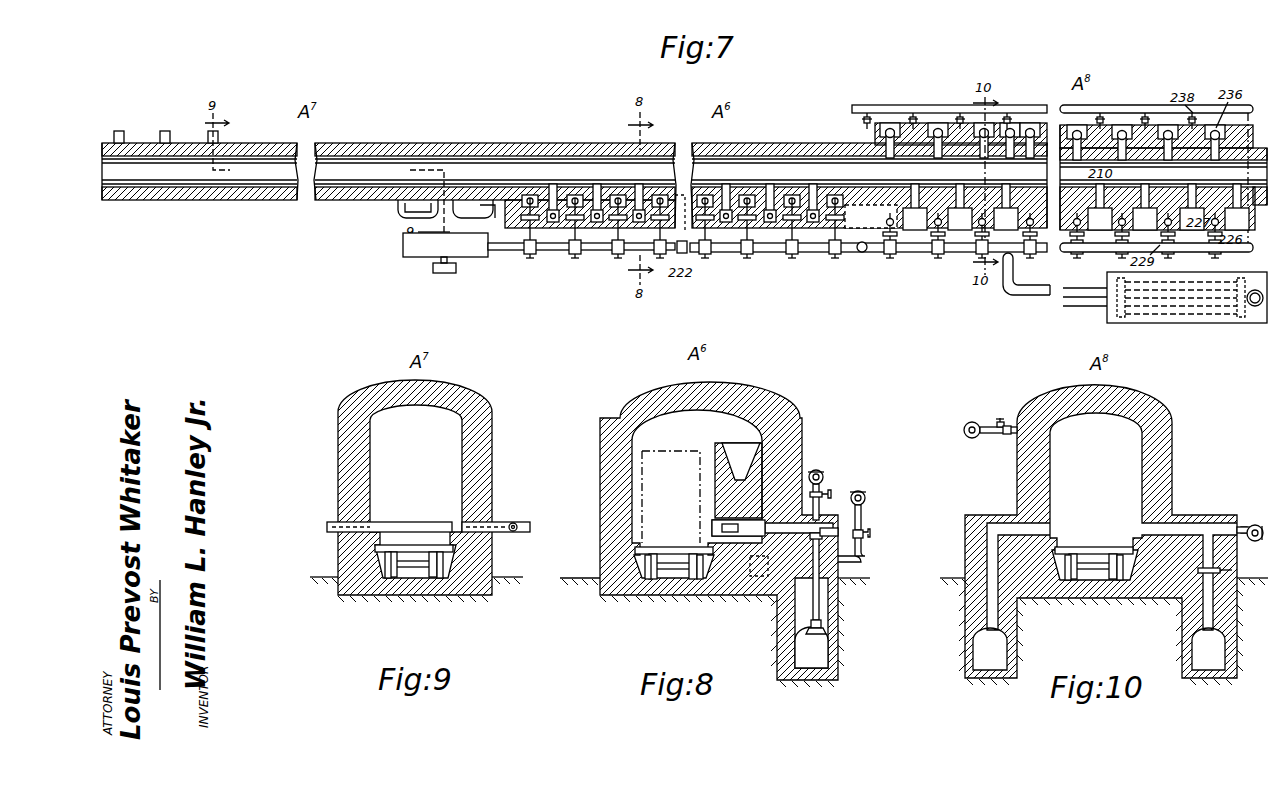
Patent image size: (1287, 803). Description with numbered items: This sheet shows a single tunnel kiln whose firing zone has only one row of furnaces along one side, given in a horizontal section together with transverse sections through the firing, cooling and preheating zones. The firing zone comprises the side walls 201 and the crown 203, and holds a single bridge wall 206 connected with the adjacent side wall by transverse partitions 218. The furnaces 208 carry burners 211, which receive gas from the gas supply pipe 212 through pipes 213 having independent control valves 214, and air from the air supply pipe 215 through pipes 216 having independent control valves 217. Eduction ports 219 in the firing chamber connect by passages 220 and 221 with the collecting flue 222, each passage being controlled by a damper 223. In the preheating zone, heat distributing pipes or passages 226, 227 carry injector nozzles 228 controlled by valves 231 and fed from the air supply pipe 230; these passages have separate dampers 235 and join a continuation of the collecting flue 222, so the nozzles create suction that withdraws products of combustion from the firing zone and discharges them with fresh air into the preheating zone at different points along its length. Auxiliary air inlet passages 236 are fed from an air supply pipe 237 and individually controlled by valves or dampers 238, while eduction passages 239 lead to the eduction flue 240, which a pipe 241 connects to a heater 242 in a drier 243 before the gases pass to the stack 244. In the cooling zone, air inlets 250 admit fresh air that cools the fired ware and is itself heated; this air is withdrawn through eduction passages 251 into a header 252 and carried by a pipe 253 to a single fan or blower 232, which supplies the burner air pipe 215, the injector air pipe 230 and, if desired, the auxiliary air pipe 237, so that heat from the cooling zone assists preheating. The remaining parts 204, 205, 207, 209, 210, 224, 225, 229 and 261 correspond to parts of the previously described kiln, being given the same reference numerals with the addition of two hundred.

In FIG. 8, the side walls 201 is at (604, 436).
In FIG. 8, the crown 203 is at (708, 388).
In FIG. 8, the heating chamber 204 is at (688, 417).
In FIG. 8, the charge outline 205 is at (704, 448).
In FIG. 8, the bridge wall 206 is at (716, 480).
In FIG. 7, the side wall 207 is at (613, 198).
In FIG. 8, the side wall 207 is at (802, 431).
In FIG. 8, the furnaces 208 is at (758, 578).
In FIG. 9, the car 209 is at (414, 554).
In FIG. 8, the car 209 is at (674, 556).
In FIG. 10, the car 209 is at (1094, 556).
In FIG. 7, the car wheels 210 is at (553, 200).
In FIG. 9, the car wheels 210 is at (438, 578).
In FIG. 8, the car wheels 210 is at (698, 580).
In FIG. 10, the car wheels 210 is at (1118, 580).
In FIG. 8, the burners 211 is at (775, 600).
In FIG. 7, the gas supply pipe 212 is at (528, 225).
In FIG. 8, the gas supply pipe 212 is at (824, 483).
In FIG. 8, the gas pipes 213 is at (838, 486).
In FIG. 8, the independent control valves 214 is at (824, 488).
In FIG. 7, the air supply pipe 215 is at (592, 251).
In FIG. 8, the air supply pipe 215 is at (864, 493).
In FIG. 8, the air pipes 216 is at (862, 560).
In FIG. 7, the independent control valves 217 is at (776, 252).
In FIG. 8, the independent control valves 217 is at (862, 538).
In FIG. 8, the transverse partitions 218 is at (750, 445).
In FIG. 8, the eduction ports 219 is at (712, 525).
In FIG. 7, the passages 220 is at (575, 198).
In FIG. 8, the passages 220 is at (730, 536).
In FIG. 7, the passages 221 is at (726, 225).
In FIG. 8, the passages 221 is at (820, 598).
In FIG. 7, the collecting flue 222 is at (681, 224).
In FIG. 8, the collecting flue 222 is at (811, 644).
In FIG. 10, the collecting flue 222 is at (1208, 653).
In FIG. 8, the dampers 223 is at (822, 530).
In FIG. 8, the nozzle 224 is at (822, 533).
In FIG. 8, the burner body 225 is at (838, 533).
In FIG. 7, the heat distributing pipes or passages 226 is at (935, 230).
In FIG. 7, the heat distributing pipes or passages 227 is at (871, 216).
In FIG. 10, the heat distributing pipes or passages 227 is at (1192, 523).
In FIG. 7, the injector nozzles 228 is at (975, 224).
In FIG. 10, the injector nozzles 228 is at (1212, 528).
In FIG. 7, the supply pipe 229 is at (1032, 250).
In FIG. 10, the supply pipe 229 is at (1218, 545).
In FIG. 7, the air supply pipe 230 is at (906, 253).
In FIG. 10, the air supply pipe 230 is at (1255, 540).
In FIG. 7, the valves 231 is at (1115, 243).
In FIG. 10, the valves 231 is at (1246, 527).
In FIG. 7, the fan or blower 232 is at (470, 257).
In FIG. 10, the dampers 235 is at (1212, 575).
In FIG. 7, the auxiliary air inlet passages 236 is at (918, 128).
In FIG. 10, the auxiliary air inlet passages 236 is at (1007, 434).
In FIG. 7, the air supply pipe 237 is at (905, 100).
In FIG. 10, the air supply pipe 237 is at (983, 420).
In FIG. 7, the valves or dampers 238 is at (867, 113).
In FIG. 10, the valves or dampers 238 is at (1002, 414).
In FIG. 7, the eduction passages 239 is at (1032, 130).
In FIG. 10, the eduction passages 239 is at (998, 523).
In FIG. 7, the eduction flue 240 is at (875, 137).
In FIG. 10, the eduction flue 240 is at (987, 653).
In FIG. 7, the pipe 241 is at (1020, 296).
In FIG. 7, the heater 242 is at (1195, 325).
In FIG. 7, the drier 243 is at (1155, 318).
In FIG. 7, the stack 244 is at (1252, 306).
In FIG. 7, the air inlets 250 is at (205, 133).
In FIG. 9, the air inlets 250 is at (327, 527).
In FIG. 7, the eduction passages 251 is at (410, 203).
In FIG. 9, the eduction passages 251 is at (500, 522).
In FIG. 7, the header 252 is at (412, 214).
In FIG. 9, the header 252 is at (508, 533).
In FIG. 7, the pipe 253 is at (447, 231).
In FIG. 9, the pipe 253 is at (530, 527).
In FIG. 7, the bracket 261 is at (498, 213).